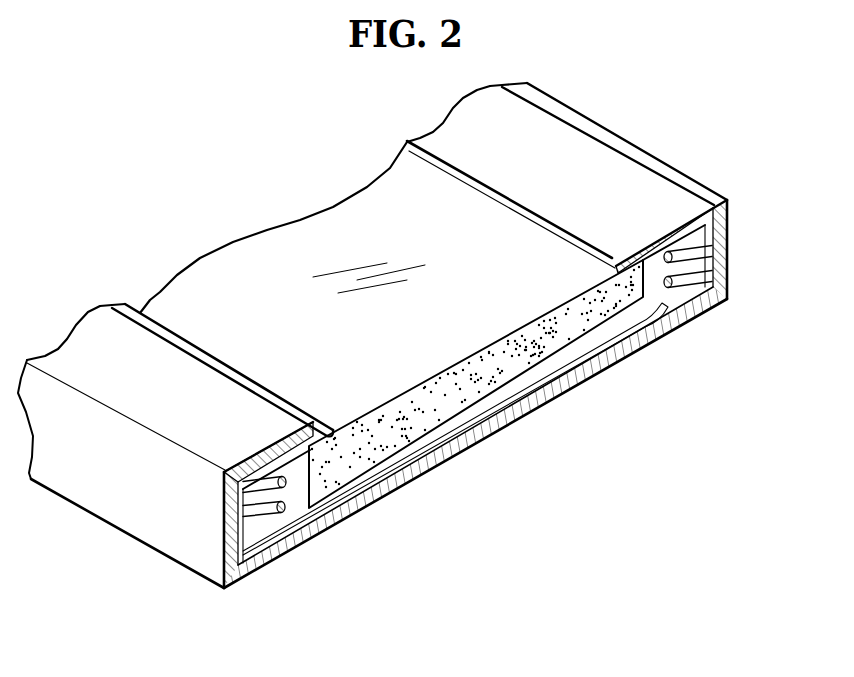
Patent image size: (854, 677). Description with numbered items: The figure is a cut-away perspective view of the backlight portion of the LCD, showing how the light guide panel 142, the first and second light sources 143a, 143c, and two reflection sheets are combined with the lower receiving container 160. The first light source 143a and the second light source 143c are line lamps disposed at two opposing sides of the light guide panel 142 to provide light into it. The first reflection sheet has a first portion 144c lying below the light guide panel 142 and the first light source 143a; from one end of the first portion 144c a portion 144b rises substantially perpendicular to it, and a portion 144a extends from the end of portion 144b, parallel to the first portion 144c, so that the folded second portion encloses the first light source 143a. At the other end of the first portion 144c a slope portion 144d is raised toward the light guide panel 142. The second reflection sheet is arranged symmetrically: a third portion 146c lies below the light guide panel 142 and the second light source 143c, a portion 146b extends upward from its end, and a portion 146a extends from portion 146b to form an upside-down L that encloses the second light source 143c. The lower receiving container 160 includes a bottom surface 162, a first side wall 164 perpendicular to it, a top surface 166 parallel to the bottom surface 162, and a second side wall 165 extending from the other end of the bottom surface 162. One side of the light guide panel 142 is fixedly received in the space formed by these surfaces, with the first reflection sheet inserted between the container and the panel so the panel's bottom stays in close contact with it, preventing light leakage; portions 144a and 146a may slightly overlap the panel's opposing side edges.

The light guide panel 142 is at (272, 240).
The first light source 143a is at (267, 473).
The second light source 143c is at (683, 244).
The portion of the second portion of the first reflection sheet 144a is at (318, 427).
The portion of the second portion of the first reflection sheet 144b is at (255, 526).
The first portion of the first reflection sheet 144c is at (480, 447).
The slope portion 144d is at (672, 317).
The portion of the fourth portion of the second reflection sheet 146a is at (667, 237).
The portion of the fourth portion of the second reflection sheet 146b is at (727, 262).
The third portion of the second reflection sheet 146c is at (648, 347).
The lower receiving container 160 is at (135, 651).
The bottom surface 162 is at (277, 577).
The first side wall 164 is at (238, 527).
The second side wall 165 is at (727, 212).
The top surface 166 is at (240, 463).